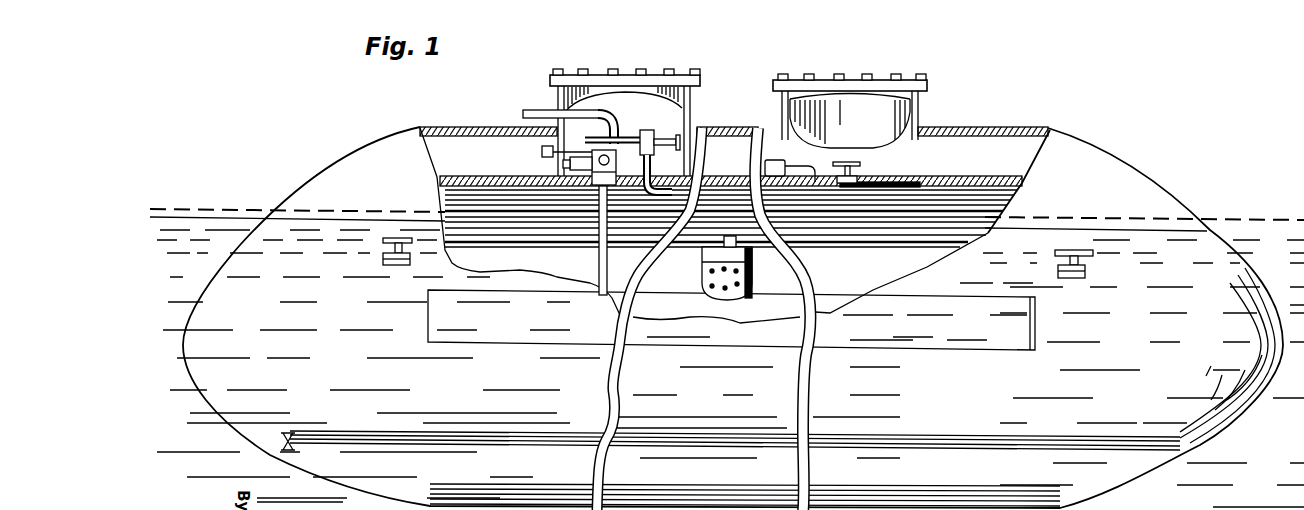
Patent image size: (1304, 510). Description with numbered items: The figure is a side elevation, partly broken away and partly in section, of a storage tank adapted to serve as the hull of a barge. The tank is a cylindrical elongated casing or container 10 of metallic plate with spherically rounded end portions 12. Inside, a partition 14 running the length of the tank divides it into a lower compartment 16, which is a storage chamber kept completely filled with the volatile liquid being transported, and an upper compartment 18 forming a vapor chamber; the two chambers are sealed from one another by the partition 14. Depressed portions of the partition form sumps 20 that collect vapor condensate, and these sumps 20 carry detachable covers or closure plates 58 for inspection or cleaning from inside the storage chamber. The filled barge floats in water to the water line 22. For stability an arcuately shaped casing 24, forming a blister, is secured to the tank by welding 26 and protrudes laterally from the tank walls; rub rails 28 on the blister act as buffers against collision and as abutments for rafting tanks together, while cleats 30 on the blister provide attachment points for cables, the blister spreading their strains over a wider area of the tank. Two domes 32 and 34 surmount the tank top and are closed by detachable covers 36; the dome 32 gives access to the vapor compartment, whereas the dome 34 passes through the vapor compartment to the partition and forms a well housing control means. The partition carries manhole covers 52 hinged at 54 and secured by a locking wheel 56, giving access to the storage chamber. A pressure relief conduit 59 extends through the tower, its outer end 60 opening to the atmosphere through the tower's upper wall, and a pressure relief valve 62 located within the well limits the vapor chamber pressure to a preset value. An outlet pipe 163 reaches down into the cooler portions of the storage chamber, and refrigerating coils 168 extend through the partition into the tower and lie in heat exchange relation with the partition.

The cylindrical elongated casing or container 10 is at (970, 131).
The spherically rounded end portions 12 is at (323, 183).
The partition 14 is at (465, 178).
The lower compartment (storage chamber) 16 is at (930, 276).
The upper compartment (vapor chamber) 18 is at (1026, 140).
The sumps 20 is at (704, 256).
The water line 22 is at (1245, 222).
The arcuately shaped casing (blister) 24 is at (1243, 283).
The welding 26 is at (292, 452).
The rub rails 28 is at (993, 336).
The cleats 30 is at (1088, 256).
The dome 32 is at (918, 118).
The dome (tower) 34 is at (688, 118).
The detachable closures or covers 36 is at (620, 77).
The covers 52 is at (907, 172).
The hinge 54 is at (750, 180).
The locking wheel 56 is at (843, 162).
The detachable covers or closure plates 58 is at (747, 285).
The conduit 59 is at (543, 148).
The outer end 60 is at (533, 110).
The pressure relief valve 62 is at (614, 128).
The outlet pipe (discharge conduit) 163 is at (598, 258).
The refrigerating coils 168 is at (856, 228).